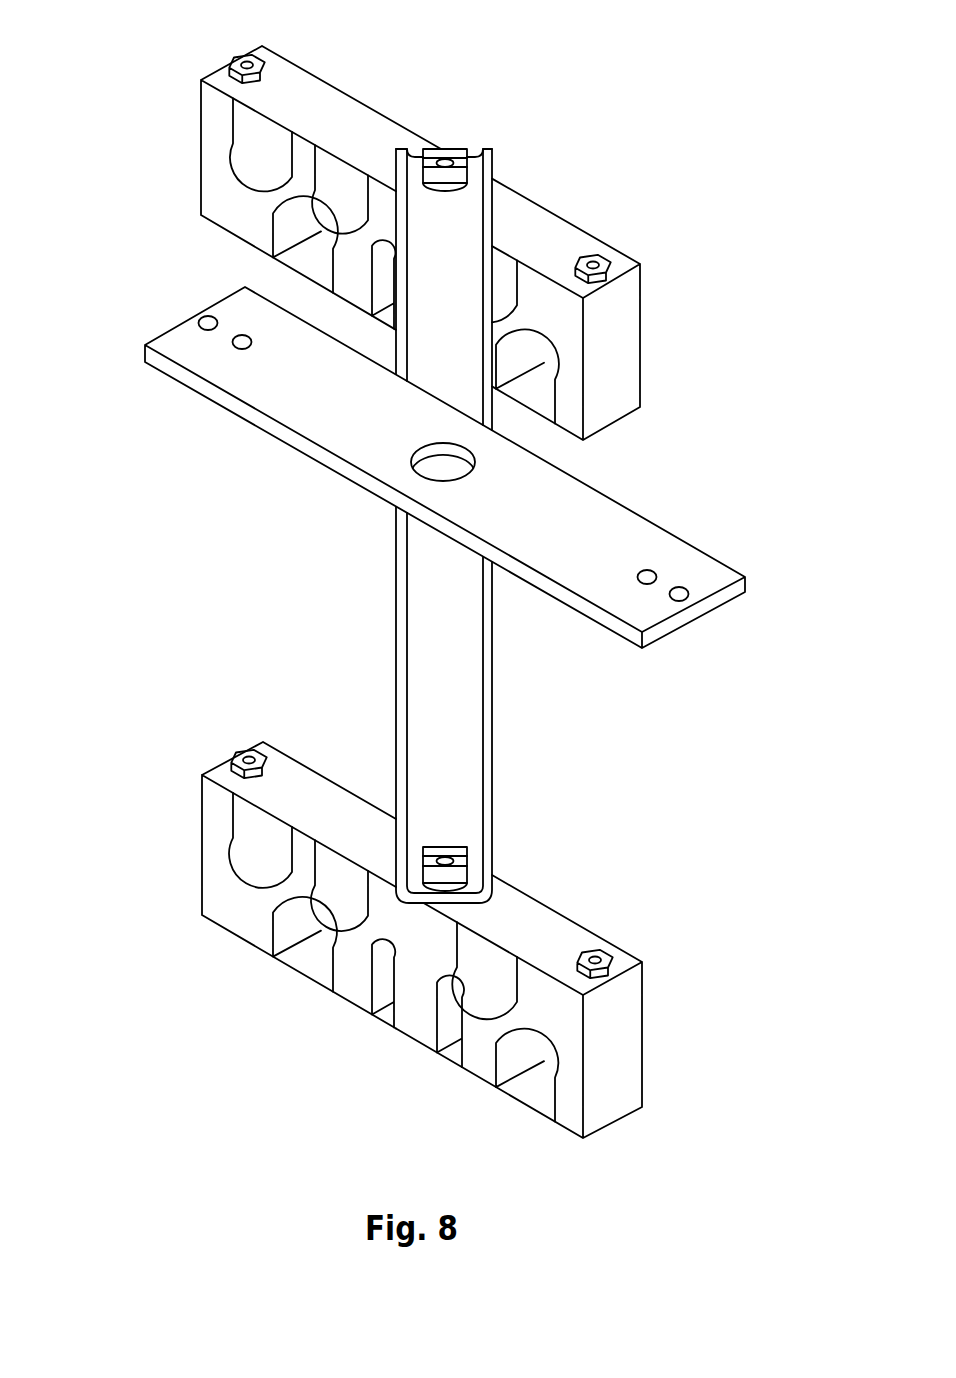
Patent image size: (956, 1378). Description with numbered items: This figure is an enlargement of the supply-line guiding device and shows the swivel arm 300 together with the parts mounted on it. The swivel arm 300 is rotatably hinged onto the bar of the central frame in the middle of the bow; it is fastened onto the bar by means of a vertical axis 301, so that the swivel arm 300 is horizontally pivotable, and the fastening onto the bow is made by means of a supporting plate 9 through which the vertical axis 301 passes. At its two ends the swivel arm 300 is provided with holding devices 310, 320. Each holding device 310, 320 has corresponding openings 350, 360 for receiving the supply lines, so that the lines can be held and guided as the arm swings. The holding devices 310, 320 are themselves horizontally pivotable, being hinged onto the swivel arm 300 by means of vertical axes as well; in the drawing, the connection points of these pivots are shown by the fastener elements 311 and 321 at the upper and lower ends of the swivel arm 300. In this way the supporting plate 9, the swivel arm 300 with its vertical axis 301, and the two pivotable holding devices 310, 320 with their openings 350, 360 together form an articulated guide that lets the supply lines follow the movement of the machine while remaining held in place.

The supporting plate 9 is at (447, 467).
The swivel arm 300 is at (460, 682).
The vertical axis 301 is at (452, 455).
The holding device 310 is at (613, 337).
The upper fastener nut 311 is at (441, 149).
The holding device 320 is at (617, 1012).
The lower fastener nut 321 is at (453, 873).
The opening 350 is at (263, 145).
The opening 360 is at (298, 958).